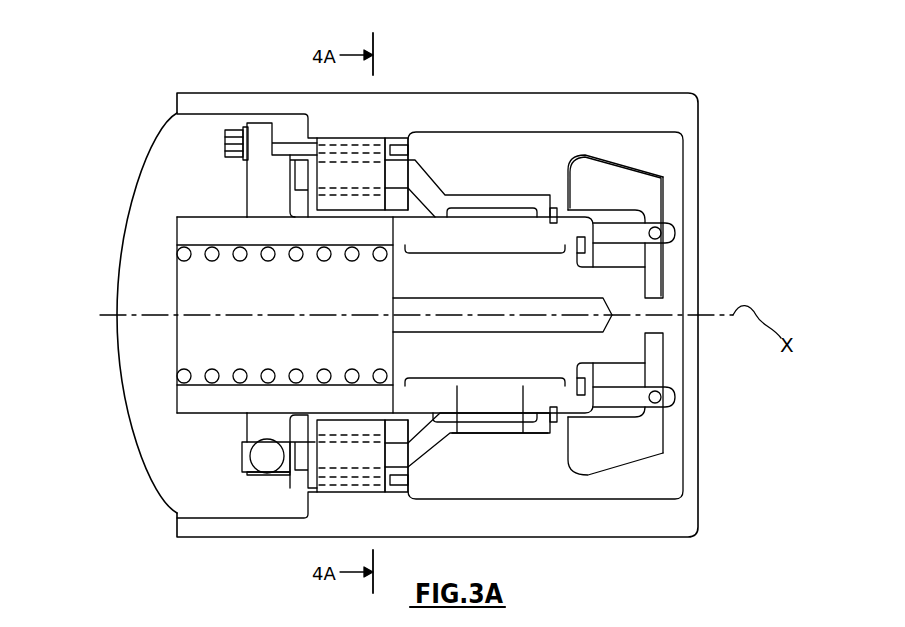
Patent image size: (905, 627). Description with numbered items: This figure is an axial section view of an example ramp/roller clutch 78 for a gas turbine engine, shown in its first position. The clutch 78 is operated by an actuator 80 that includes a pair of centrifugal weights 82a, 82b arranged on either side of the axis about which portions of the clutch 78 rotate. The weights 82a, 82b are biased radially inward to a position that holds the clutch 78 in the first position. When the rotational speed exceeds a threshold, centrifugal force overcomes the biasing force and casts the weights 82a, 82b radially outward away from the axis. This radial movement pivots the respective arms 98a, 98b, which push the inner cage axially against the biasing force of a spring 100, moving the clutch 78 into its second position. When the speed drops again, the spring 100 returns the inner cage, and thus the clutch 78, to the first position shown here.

The ramp/roller clutch 78 is at (602, 72).
The actuator 80 is at (637, 156).
The centrifugal weight 82a is at (655, 198).
The centrifugal weight 82b is at (653, 438).
The arm 98a is at (655, 270).
The arm 98b is at (655, 363).
The spring 100 is at (181, 374).